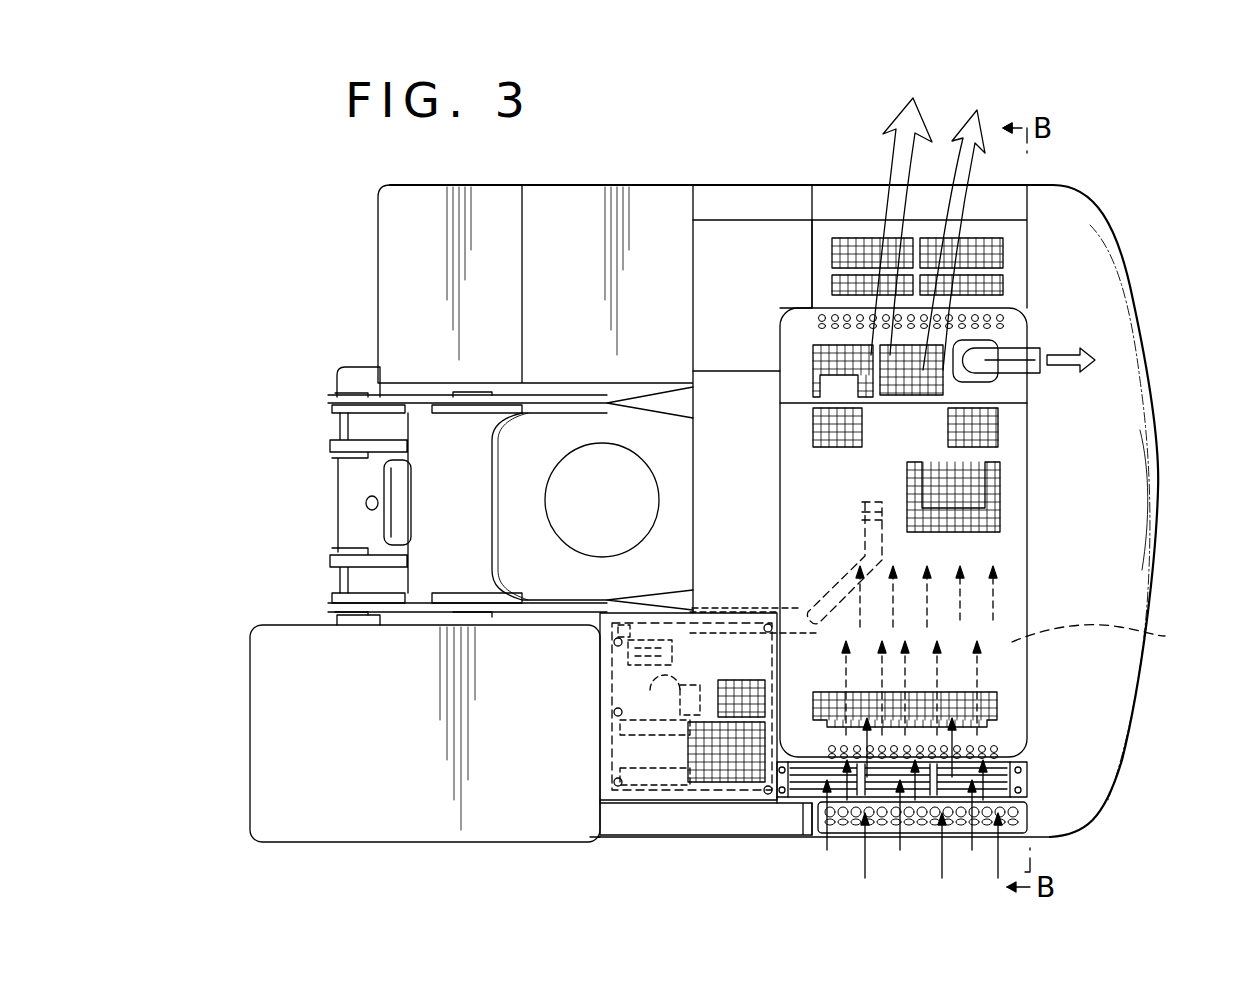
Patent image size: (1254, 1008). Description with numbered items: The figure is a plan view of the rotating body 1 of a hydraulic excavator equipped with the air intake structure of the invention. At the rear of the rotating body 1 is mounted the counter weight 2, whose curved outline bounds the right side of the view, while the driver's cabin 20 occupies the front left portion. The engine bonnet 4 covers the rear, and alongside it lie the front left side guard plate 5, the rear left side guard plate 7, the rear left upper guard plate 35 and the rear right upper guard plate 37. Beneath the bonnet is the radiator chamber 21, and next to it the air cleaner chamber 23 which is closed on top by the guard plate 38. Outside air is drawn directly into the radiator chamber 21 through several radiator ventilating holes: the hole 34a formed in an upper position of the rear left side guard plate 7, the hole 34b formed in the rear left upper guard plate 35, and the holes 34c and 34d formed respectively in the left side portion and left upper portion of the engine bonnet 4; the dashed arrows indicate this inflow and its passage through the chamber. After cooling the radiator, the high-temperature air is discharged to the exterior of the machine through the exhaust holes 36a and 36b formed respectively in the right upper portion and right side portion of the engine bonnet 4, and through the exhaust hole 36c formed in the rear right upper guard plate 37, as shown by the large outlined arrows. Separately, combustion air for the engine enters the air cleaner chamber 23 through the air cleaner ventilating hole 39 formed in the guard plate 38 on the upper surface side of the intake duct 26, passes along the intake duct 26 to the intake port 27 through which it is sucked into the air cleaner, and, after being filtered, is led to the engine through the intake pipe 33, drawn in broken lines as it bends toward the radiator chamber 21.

The rotating body 1 is at (1110, 188).
The counter weight 2 is at (1158, 496).
The engine bonnet 4 is at (1030, 583).
The front left side guard plate 5 is at (645, 805).
The rear left side guard plate 7 is at (921, 826).
The driver's cabin 20 is at (268, 770).
The radiator chamber 21 is at (1111, 633).
The air cleaner chamber 23 is at (615, 740).
The intake duct 26 is at (743, 805).
The intake port 27 is at (705, 642).
The intake pipe 33 is at (797, 608).
The radiator ventilating hole 34a is at (1020, 828).
The radiator ventilating hole 34b is at (1028, 776).
The radiator ventilating hole 34c is at (1000, 750).
The radiator ventilating hole 34d is at (1000, 705).
The rear left upper guard plate 35 is at (800, 810).
The exhaust hole 36a is at (1000, 475).
The exhaust hole 36b is at (1003, 320).
The exhaust hole 36c is at (1005, 263).
The rear right upper guard plate 37 is at (840, 227).
The guard plate 38 is at (600, 690).
The air cleaner ventilating hole 39 is at (730, 752).